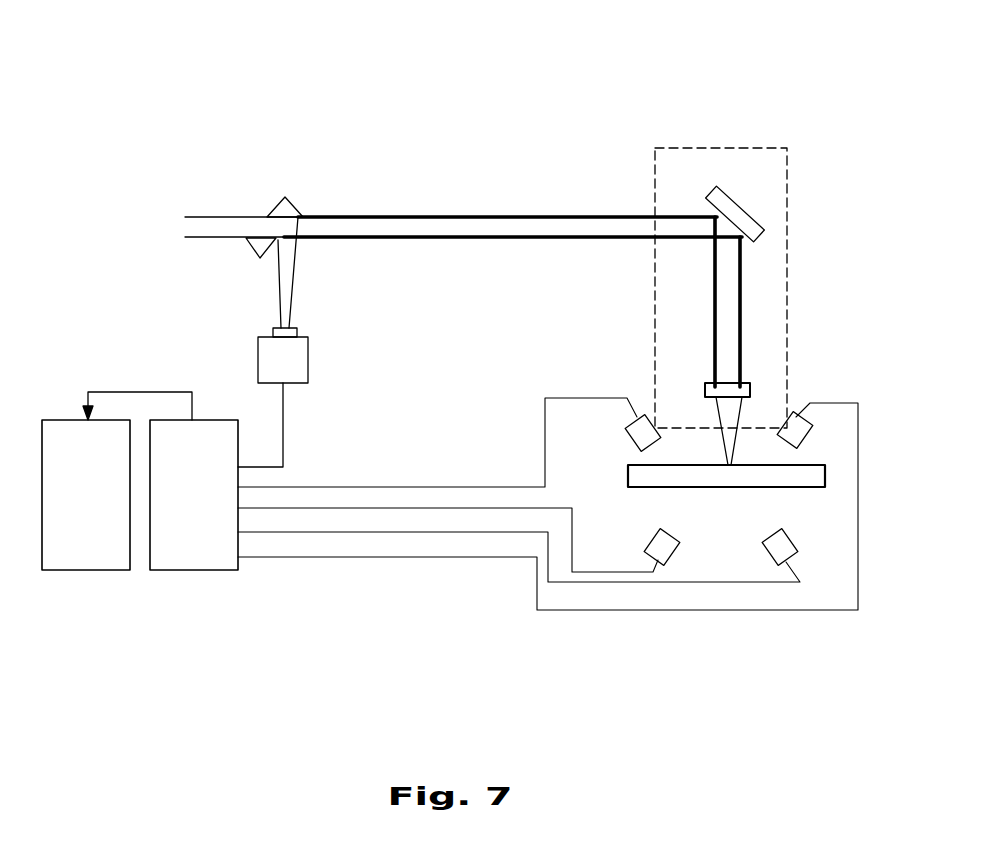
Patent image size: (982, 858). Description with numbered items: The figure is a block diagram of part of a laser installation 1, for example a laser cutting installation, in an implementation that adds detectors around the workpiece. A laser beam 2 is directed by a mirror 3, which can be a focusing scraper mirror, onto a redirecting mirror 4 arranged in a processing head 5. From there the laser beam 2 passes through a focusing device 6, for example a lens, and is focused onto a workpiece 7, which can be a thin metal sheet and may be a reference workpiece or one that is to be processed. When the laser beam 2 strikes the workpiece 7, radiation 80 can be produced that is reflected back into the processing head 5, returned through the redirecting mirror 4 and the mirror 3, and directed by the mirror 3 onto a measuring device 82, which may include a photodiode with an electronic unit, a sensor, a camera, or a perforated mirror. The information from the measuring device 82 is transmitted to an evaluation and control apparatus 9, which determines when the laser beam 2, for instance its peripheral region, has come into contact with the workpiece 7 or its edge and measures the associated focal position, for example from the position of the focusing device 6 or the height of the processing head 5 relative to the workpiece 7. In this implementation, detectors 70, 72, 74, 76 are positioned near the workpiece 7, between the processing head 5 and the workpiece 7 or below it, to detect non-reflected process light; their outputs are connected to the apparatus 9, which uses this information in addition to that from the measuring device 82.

The laser installation 1 is at (495, 106).
The laser beam 2 is at (203, 228).
The mirror 3 is at (285, 197).
The redirecting mirror 4 is at (742, 216).
The processing head 5 is at (788, 275).
The focusing device 6 is at (752, 389).
The workpiece 7 is at (656, 478).
The evaluation and control apparatus 9 is at (62, 432).
The detector 70 is at (632, 438).
The detector 72 is at (805, 441).
The detector 74 is at (795, 540).
The detector 76 is at (672, 549).
The radiation 80 is at (460, 244).
The measuring device 82 is at (300, 370).